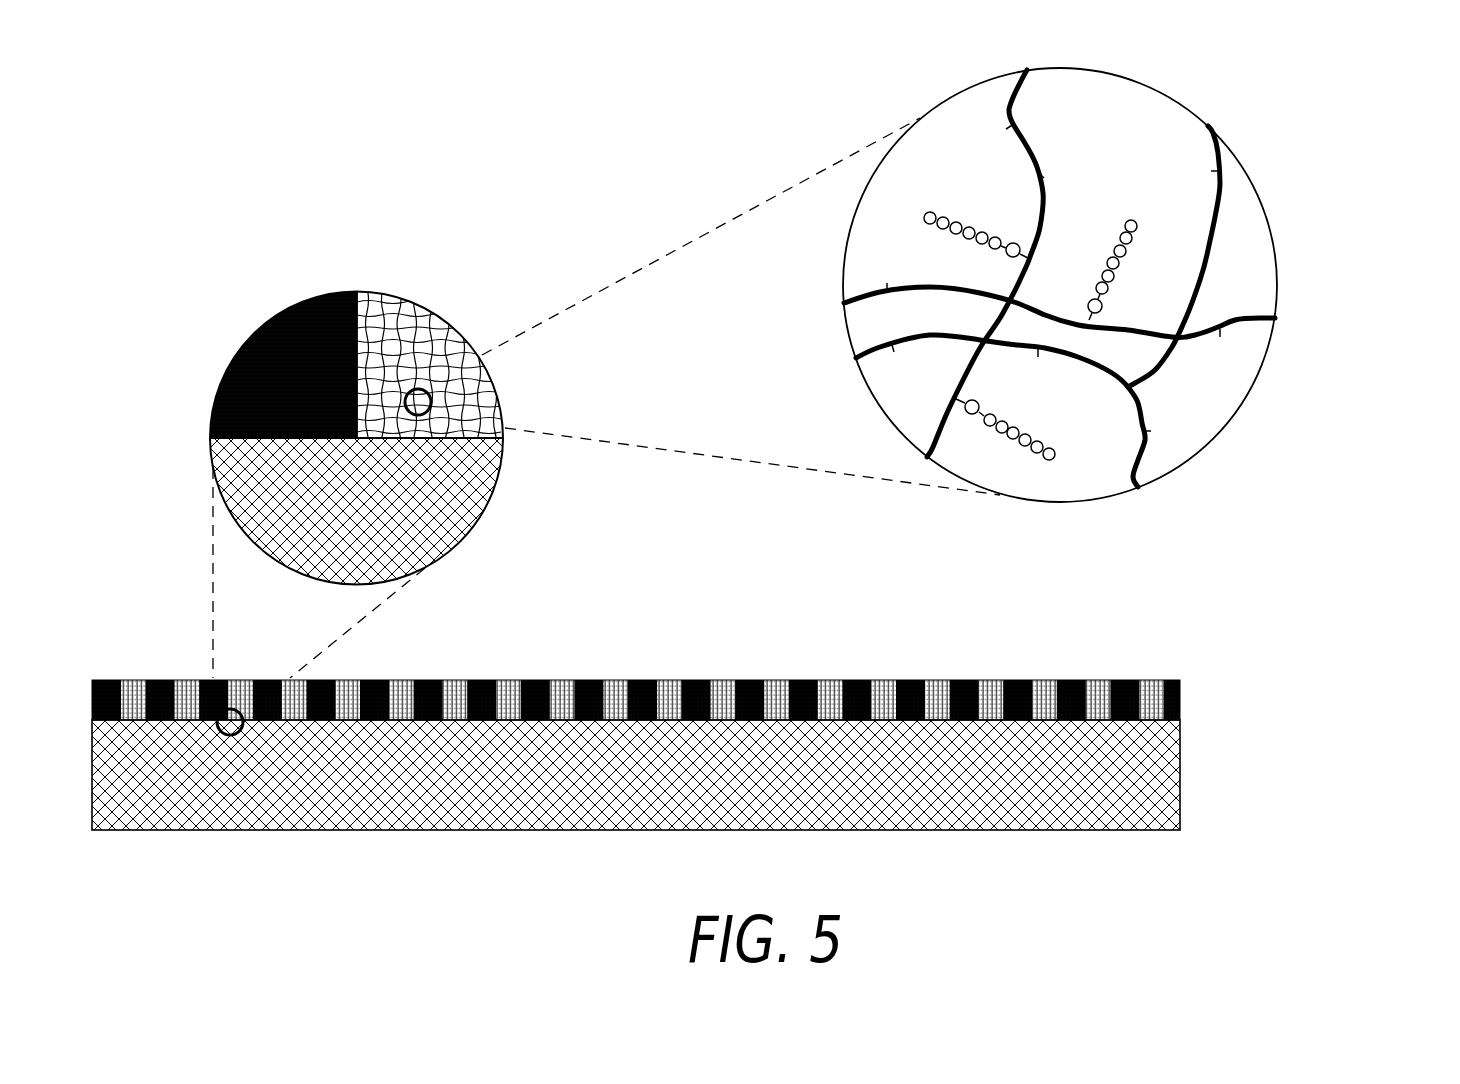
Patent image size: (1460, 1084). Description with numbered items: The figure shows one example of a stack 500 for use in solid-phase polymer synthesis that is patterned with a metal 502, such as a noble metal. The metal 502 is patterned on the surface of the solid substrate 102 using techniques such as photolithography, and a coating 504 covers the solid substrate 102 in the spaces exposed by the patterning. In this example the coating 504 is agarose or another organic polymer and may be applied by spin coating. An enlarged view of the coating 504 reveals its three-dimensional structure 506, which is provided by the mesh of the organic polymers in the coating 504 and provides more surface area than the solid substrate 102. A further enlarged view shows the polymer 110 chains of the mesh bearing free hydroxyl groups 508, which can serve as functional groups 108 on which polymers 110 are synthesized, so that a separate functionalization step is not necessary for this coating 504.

The stack 500 is at (152, 100).
The metal 502 is at (305, 293).
The coating 504 is at (417, 293).
The three-dimensional structure 506 is at (508, 503).
The solid substrate 102 is at (719, 775).
The hydroxyl groups 508 is at (978, 125).
The polymers 110 is at (1148, 222).
The functional groups 108 is at (1110, 310).